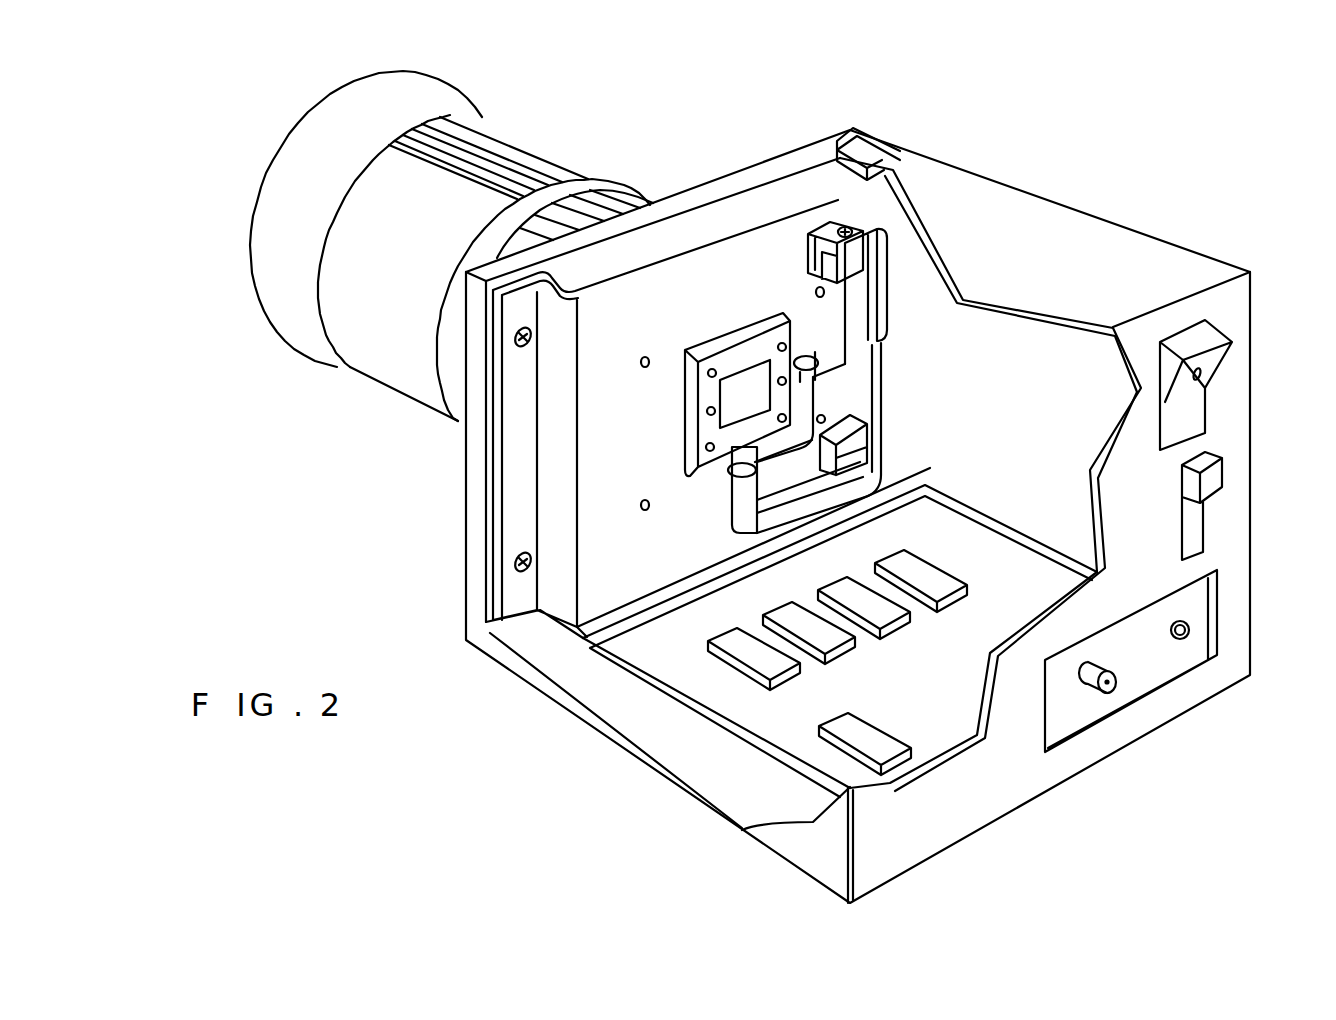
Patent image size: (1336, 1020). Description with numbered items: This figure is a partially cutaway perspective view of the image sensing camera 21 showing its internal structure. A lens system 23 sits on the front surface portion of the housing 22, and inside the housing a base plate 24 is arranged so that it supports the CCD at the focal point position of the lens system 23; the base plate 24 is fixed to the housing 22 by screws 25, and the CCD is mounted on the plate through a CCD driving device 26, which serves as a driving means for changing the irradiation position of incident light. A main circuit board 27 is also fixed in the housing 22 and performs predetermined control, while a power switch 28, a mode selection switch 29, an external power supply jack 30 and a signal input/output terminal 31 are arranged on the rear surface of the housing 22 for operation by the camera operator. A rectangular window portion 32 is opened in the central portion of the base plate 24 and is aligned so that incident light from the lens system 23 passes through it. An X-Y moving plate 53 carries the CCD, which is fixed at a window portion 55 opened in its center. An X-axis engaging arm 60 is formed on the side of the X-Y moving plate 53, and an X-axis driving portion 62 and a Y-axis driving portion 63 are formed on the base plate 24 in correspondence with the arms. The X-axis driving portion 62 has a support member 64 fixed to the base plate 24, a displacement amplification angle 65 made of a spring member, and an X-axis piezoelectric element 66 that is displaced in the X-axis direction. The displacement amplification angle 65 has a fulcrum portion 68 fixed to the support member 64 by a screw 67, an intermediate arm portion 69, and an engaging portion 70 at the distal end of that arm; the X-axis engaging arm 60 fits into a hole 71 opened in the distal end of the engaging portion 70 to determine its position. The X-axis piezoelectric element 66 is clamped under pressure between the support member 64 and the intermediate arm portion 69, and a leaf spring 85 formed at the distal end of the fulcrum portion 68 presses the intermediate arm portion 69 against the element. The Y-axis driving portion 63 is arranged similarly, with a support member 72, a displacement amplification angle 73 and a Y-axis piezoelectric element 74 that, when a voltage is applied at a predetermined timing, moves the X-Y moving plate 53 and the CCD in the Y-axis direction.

The image sensing camera 21 is at (1102, 185).
The housing 22 is at (1185, 482).
The lens system 23 is at (300, 122).
The base plate 24 is at (700, 265).
The screws 25 is at (518, 345).
The CCD driving device 26 is at (900, 213).
The main circuit board 27 is at (708, 695).
The power switch 28 is at (1213, 364).
The mode selection switch 29 is at (1220, 478).
The external power supply jack 30 is at (1188, 633).
The signal input/output terminal 31 is at (1108, 684).
The window portion 32 is at (702, 371).
The X-Y moving plate 53 is at (725, 371).
The window portion 55 is at (712, 362).
The X-axis engaging arm 60 is at (870, 387).
The X-axis driving portion 62 is at (907, 264).
The Y-axis driving portion 63 is at (888, 457).
The support member 64 is at (899, 164).
The displacement amplification angle 65 is at (890, 290).
The X-axis piezoelectric element 66 is at (915, 237).
The screw 67 is at (878, 222).
The fulcrum portion 68 is at (846, 228).
The intermediate arm portion 69 is at (885, 322).
The engaging portion 70 is at (883, 345).
The hole 71 is at (808, 352).
The support member 72 is at (878, 440).
The displacement amplification angle 73 is at (825, 495).
The Y-axis piezoelectric element 74 is at (893, 460).
The leaf spring 85 is at (805, 182).